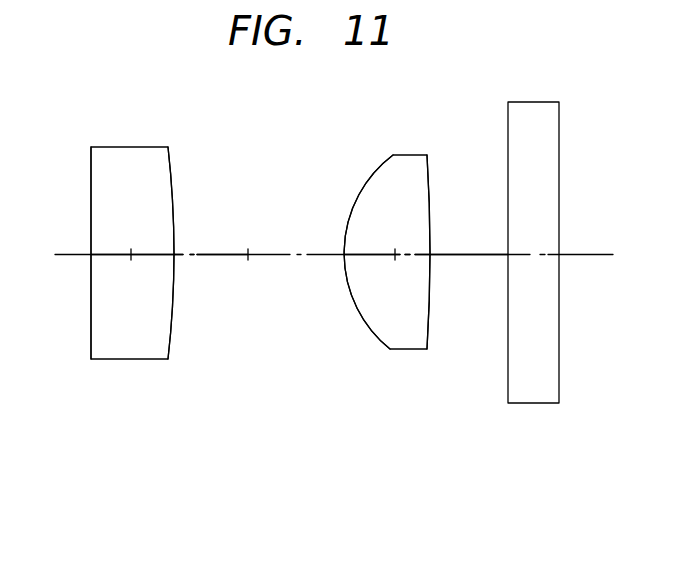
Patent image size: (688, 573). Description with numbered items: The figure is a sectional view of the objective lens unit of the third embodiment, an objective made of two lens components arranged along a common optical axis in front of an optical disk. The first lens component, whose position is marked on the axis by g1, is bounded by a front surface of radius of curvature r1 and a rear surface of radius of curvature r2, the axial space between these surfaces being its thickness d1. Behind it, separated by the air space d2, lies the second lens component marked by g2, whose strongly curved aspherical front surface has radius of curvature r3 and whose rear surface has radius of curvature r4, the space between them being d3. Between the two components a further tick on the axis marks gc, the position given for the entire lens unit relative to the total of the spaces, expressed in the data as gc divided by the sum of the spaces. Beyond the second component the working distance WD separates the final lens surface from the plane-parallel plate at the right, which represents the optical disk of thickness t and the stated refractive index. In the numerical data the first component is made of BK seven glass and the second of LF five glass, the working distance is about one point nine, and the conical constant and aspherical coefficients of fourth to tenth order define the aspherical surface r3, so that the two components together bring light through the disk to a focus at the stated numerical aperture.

The first lens component center of gravity position g1 is at (132, 253).
The second lens component center of gravity position g2 is at (387, 252).
The center of gravity of the entire lens unit gc is at (246, 268).
The radius of curvature of first lens surface r1 is at (90, 356).
The radius of curvature of second lens surface r2 is at (170, 350).
The radius of curvature of third lens surface r3 is at (380, 350).
The radius of curvature of fourth lens surface r4 is at (427, 350).
The space between first and second lens surfaces d1 is at (108, 254).
The space between second and third lens surfaces d2 is at (220, 253).
The space between third and fourth lens surfaces d3 is at (362, 254).
The working distance WD is at (465, 253).
The thickness of optical disk t is at (528, 254).